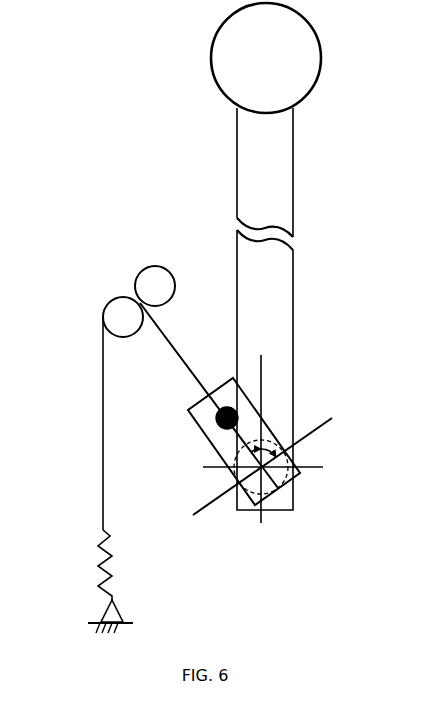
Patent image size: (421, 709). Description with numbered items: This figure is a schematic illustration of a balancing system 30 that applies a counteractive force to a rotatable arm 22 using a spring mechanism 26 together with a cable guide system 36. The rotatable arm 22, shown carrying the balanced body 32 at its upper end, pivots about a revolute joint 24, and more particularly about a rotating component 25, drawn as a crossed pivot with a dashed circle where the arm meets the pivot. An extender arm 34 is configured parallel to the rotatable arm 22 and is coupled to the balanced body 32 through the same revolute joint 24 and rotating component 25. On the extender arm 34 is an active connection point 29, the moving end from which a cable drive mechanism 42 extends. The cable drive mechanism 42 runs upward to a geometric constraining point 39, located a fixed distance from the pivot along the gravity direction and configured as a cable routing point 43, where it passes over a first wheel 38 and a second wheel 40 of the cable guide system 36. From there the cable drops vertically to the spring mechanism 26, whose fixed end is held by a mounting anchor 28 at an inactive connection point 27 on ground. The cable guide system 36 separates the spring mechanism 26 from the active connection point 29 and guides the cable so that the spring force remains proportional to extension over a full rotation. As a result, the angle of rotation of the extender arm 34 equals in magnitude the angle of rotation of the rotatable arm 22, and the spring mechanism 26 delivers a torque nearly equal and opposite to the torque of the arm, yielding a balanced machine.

The balancing system 30 is at (100, 38).
The balanced body 32 is at (213, 82).
The rotatable arm 22 is at (236, 198).
The first wheel 38 is at (150, 266).
The second wheel 40 is at (104, 311).
The geometric constraining point 39 is at (95, 281).
The cable routing point 43 is at (106, 286).
The cable drive mechanism 42 is at (168, 336).
The cable guide system 36 is at (80, 368).
The spring mechanism 26 is at (112, 552).
The inactive connection point 27 is at (94, 625).
The mounting anchor 28 is at (121, 607).
The active connection point 29 is at (216, 416).
The extender arm 34 is at (192, 432).
The revolute joint 24 is at (262, 446).
The rotating component 25 is at (238, 477).